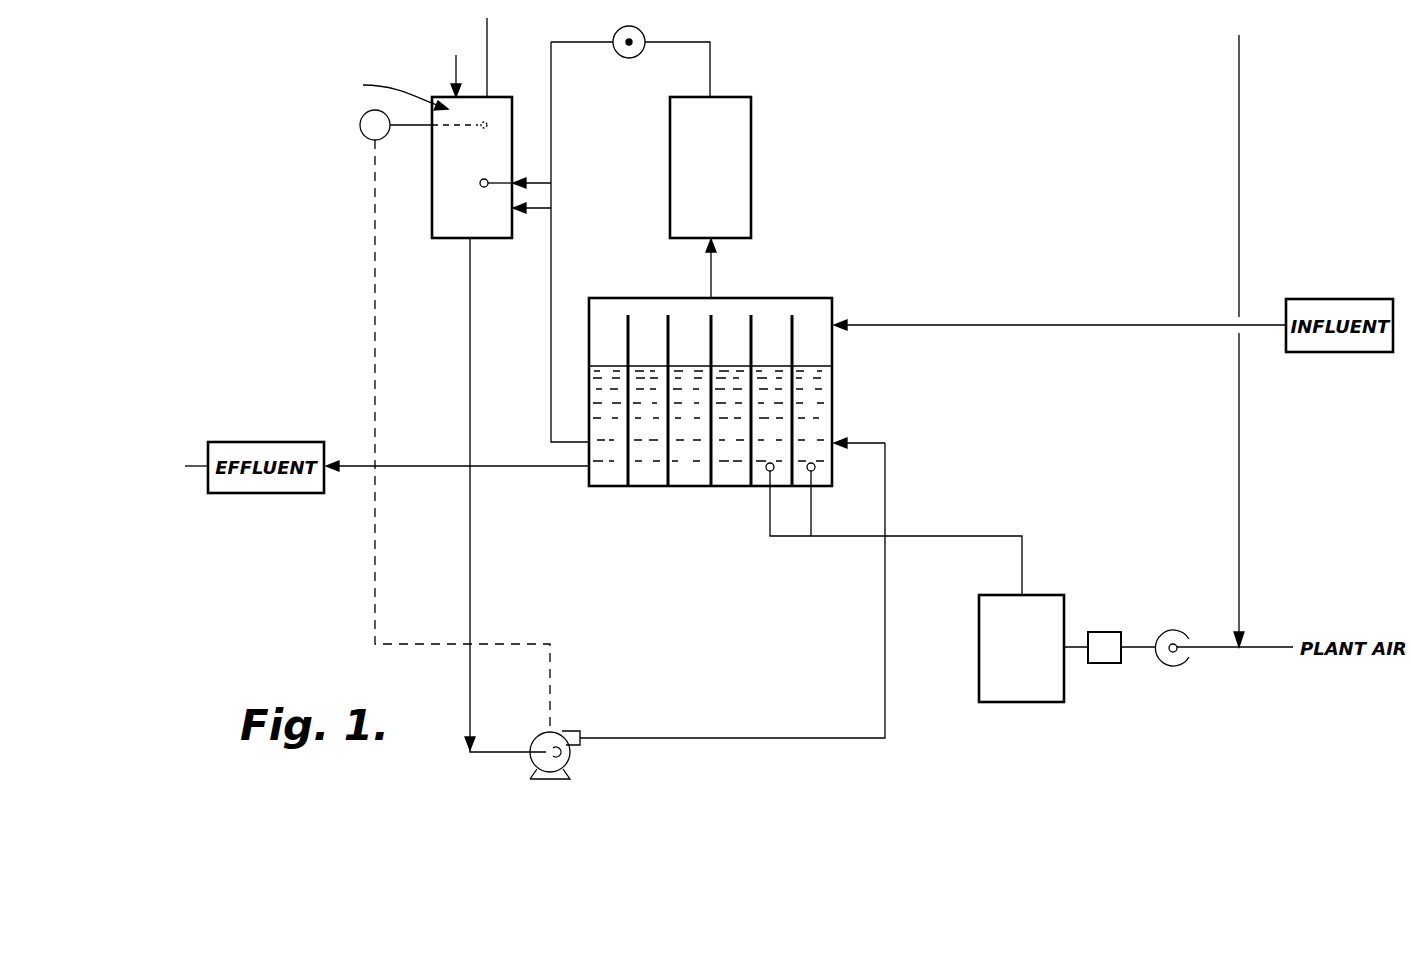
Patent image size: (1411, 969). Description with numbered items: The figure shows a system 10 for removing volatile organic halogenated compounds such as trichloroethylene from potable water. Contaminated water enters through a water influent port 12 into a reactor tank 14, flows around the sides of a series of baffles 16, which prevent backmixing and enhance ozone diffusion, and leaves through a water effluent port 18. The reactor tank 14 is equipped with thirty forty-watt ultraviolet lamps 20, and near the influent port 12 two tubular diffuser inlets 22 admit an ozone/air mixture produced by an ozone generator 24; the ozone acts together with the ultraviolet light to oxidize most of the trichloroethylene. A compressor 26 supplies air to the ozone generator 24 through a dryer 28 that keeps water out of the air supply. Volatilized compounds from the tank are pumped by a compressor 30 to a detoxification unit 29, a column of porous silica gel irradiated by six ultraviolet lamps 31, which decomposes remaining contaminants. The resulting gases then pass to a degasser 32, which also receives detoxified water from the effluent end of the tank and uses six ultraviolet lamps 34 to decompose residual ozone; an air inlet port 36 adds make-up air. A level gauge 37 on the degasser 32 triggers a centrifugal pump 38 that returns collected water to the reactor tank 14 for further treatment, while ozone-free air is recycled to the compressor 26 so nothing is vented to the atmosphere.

The system 10 is at (1260, 104).
The water influent port 12 is at (836, 331).
The reactor tank 14 is at (836, 302).
The baffles 16 is at (757, 322).
The water effluent port 18 is at (586, 466).
The ultraviolet lamps 20 is at (583, 518).
The tubular diffuser inlets 22 is at (812, 464).
The ozone generator 24 is at (1040, 596).
The compressor 26 is at (1176, 630).
The dryer 28 is at (1103, 632).
The detoxification unit 29 is at (753, 107).
The compressor 30 is at (624, 60).
The ultraviolet lamps 31 is at (942, 152).
The degasser 32 is at (440, 240).
The ultraviolet lamps 34 is at (277, 107).
The air inlet port 36 is at (448, 93).
The level gauge 37 is at (363, 140).
The centrifugal pump 38 is at (568, 732).